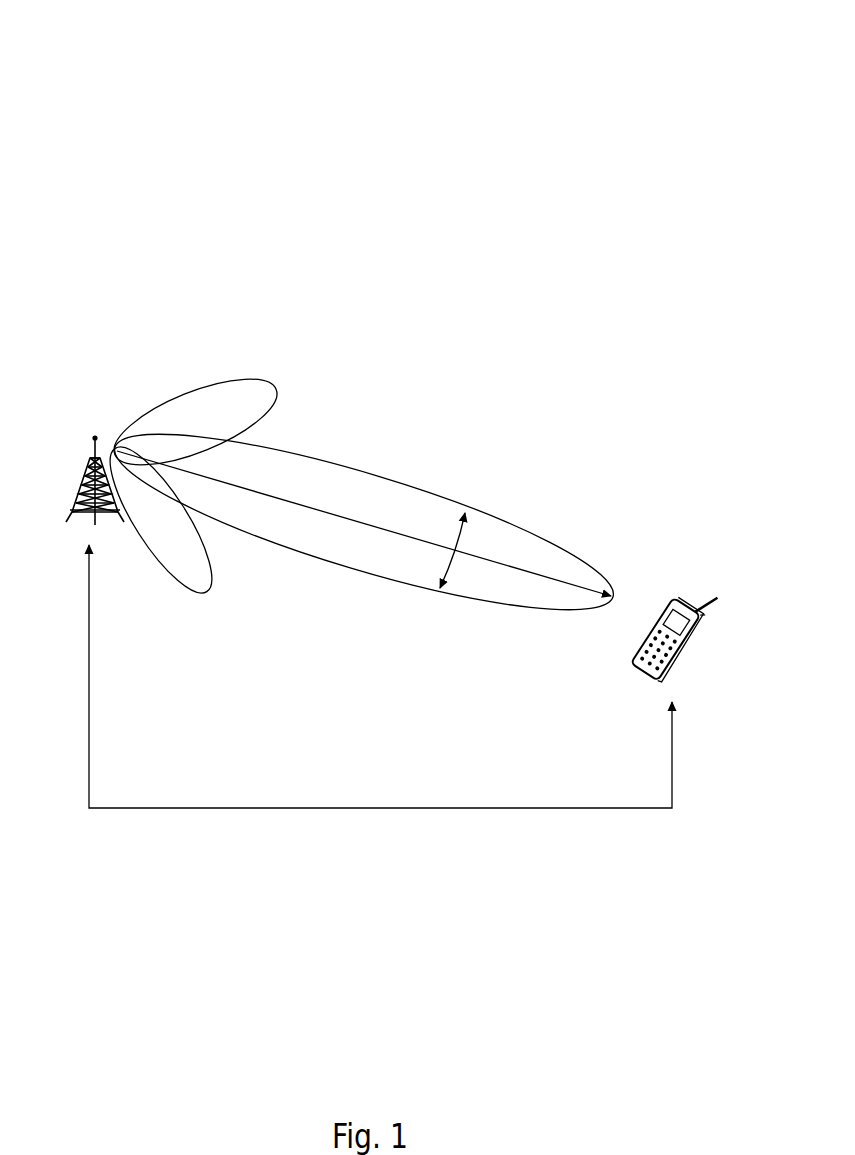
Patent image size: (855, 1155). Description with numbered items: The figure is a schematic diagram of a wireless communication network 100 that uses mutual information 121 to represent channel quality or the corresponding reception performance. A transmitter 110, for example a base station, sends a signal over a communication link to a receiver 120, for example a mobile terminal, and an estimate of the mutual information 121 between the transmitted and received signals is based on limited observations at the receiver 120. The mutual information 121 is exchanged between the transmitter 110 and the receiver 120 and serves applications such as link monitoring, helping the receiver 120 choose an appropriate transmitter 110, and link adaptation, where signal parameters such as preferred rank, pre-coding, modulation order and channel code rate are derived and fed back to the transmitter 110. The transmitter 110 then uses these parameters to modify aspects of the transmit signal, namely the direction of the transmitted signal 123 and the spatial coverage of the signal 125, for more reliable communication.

The wireless communication network 100 is at (294, 106).
The transmitter 110 is at (92, 411).
The receiver 120 is at (680, 563).
The mutual information 121 is at (259, 806).
The direction of the transmitted signal 123 is at (360, 460).
The spatial coverage of the signal 125 is at (480, 527).